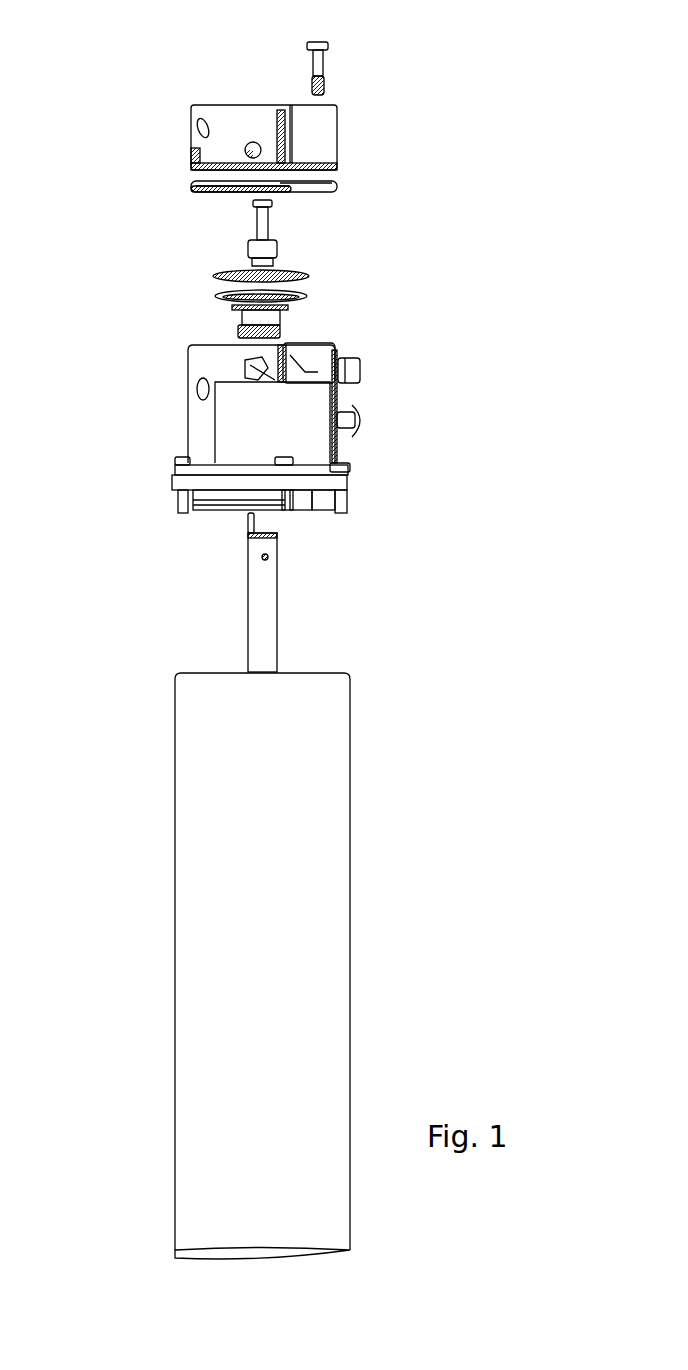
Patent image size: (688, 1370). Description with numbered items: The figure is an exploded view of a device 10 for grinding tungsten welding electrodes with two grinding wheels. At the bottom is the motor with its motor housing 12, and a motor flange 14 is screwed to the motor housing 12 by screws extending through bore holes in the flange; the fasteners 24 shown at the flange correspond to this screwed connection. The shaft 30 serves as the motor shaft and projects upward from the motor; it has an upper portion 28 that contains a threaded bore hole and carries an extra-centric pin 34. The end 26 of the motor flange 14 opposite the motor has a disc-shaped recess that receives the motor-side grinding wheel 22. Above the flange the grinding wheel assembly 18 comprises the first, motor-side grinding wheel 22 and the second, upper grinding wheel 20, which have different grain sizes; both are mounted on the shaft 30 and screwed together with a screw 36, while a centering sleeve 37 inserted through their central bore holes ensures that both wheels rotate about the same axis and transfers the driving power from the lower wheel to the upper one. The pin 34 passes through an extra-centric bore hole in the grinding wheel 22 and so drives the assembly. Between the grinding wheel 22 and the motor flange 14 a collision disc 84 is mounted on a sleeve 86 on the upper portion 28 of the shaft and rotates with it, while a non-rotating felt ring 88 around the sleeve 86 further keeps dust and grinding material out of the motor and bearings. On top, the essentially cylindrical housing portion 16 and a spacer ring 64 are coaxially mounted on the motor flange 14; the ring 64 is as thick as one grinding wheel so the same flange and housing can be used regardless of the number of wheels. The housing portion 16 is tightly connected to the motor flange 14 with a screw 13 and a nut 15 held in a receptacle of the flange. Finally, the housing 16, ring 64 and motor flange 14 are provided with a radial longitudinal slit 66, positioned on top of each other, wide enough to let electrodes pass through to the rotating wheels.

The device for grinding welding electrodes 10 is at (395, 922).
The motor housing 12 is at (320, 1040).
The screw 13 is at (318, 63).
The motor flange 14 is at (350, 487).
The nut 15 is at (355, 375).
The housing portion 16 is at (325, 145).
The grinding wheel assembly 18 is at (207, 285).
The grinding wheel 20 is at (310, 275).
The grinding wheel 22 is at (372, 316).
The fastening bolt 24 is at (185, 478).
The end of the motor flange 26 is at (222, 335).
The upper portion of the shaft 28 is at (265, 543).
The shaft 30 is at (305, 599).
The extra-centric pin 34 is at (245, 527).
The screw 36 is at (267, 223).
The centering sleeve 37 is at (247, 250).
The spacer ring 64 is at (337, 188).
The longitudinal slit 66 is at (285, 108).
The collision disc 84 is at (213, 293).
The sleeve 86 is at (282, 320).
The felt ring 88 is at (280, 337).